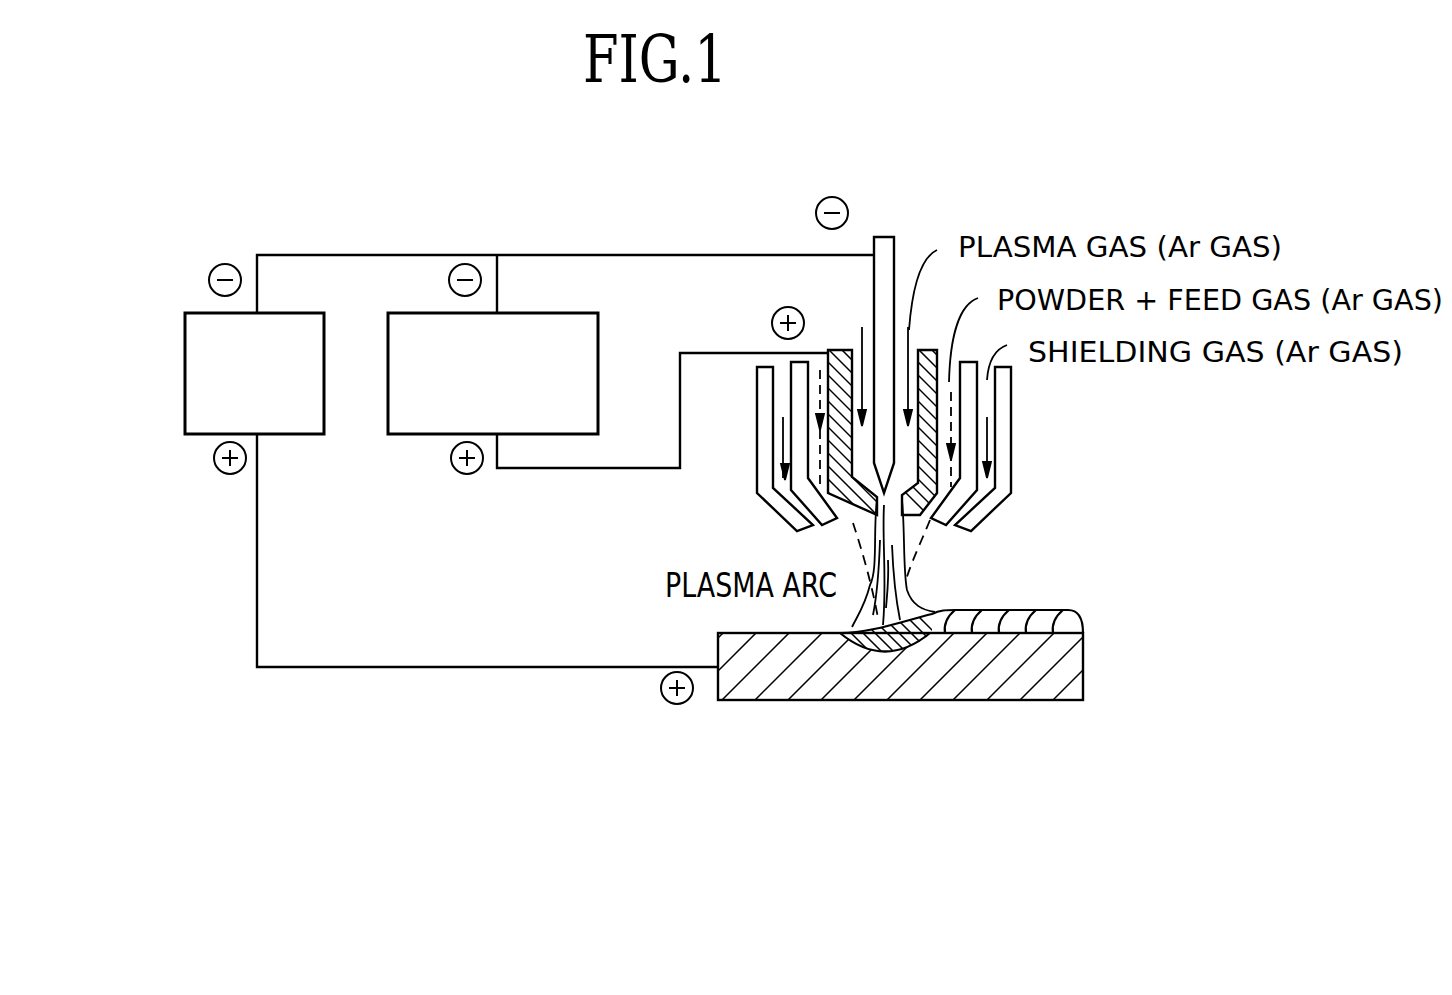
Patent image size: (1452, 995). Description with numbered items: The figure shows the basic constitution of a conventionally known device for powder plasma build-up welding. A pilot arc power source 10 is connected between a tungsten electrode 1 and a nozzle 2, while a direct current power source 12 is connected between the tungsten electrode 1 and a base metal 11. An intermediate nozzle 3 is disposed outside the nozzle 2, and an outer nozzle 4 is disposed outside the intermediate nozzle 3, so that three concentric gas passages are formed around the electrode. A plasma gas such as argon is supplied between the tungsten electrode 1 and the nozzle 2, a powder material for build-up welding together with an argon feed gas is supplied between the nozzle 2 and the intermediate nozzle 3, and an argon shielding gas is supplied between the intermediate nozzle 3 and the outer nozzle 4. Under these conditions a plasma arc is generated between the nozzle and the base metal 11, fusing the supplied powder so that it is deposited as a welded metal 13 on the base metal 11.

The tungsten electrode 1 is at (885, 237).
The nozzle 2 is at (840, 347).
The intermediate nozzle 3 is at (942, 523).
The outer nozzle 4 is at (998, 507).
The pilot arc power source 10 is at (410, 434).
The base metal 11 is at (1083, 672).
The direct current power source 12 is at (185, 434).
The welded metal 13 is at (1040, 615).